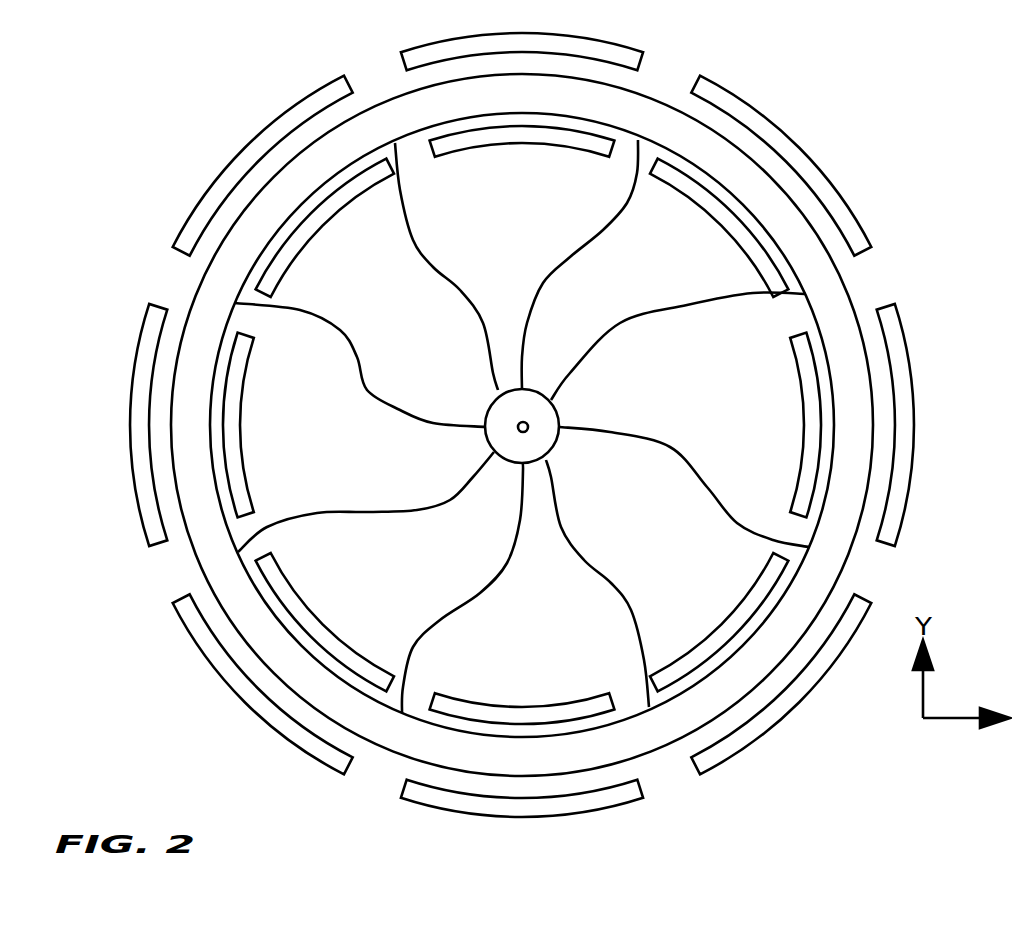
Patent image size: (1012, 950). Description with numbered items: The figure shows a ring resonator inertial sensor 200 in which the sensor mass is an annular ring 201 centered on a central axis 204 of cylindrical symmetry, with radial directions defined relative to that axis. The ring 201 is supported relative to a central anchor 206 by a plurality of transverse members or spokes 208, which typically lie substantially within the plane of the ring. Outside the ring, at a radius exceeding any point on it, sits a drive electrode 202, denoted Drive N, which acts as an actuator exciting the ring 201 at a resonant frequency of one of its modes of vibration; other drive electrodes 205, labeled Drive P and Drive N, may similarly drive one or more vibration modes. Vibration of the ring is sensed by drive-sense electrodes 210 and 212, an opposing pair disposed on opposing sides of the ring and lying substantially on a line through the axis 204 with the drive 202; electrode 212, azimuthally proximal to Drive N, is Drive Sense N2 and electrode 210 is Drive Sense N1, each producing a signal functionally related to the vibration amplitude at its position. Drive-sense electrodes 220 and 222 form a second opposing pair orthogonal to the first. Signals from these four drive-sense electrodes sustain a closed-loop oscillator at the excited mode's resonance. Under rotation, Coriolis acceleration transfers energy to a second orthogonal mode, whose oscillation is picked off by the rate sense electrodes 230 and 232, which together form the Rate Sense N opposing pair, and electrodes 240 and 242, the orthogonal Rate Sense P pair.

The inertial sensor 200 is at (170, 148).
The ring 201 is at (195, 562).
The drive electrode 202 is at (593, 813).
The axis 204 is at (524, 428).
The other drive electrodes 205 is at (435, 43).
The anchor 206 is at (553, 410).
The transverse members 208 is at (358, 366).
The drive-sense electrode 210 is at (448, 158).
The drive-sense electrode 212 is at (447, 697).
The drive-sense electrode 220 is at (246, 478).
The drive-sense electrode 222 is at (795, 362).
The rate sense electrode 230 is at (765, 275).
The rate sense electrode 232 is at (283, 573).
The rate sense electrode 240 is at (285, 273).
The rate sense electrode 242 is at (760, 577).